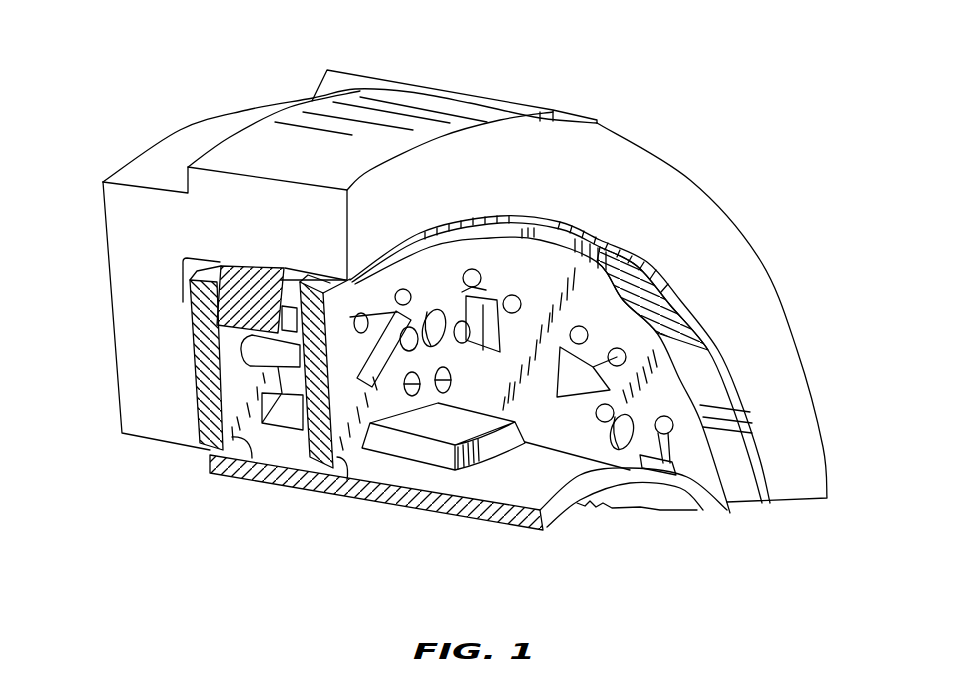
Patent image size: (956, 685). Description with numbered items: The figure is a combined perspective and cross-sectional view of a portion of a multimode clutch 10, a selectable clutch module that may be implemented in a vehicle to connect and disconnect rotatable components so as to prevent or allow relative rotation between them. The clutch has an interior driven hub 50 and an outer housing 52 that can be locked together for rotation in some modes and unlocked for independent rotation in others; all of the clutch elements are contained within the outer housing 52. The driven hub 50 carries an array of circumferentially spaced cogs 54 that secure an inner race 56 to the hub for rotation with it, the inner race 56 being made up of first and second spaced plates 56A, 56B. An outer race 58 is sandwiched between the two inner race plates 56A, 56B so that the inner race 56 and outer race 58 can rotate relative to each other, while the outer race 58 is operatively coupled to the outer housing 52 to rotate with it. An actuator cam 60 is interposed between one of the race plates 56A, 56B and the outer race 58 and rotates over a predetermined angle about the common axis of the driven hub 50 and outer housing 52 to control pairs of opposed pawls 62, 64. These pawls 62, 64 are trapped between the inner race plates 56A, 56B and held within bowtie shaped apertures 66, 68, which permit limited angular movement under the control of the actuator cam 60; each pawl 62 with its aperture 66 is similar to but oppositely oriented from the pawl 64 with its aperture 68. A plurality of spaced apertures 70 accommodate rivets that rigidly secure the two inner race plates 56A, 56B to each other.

The multimode clutch 10 is at (137, 118).
The driven hub 50 is at (543, 487).
The outer housing 52 is at (615, 199).
The cogs 54 is at (397, 443).
The inner race 56 is at (203, 460).
The first inner race plate 56A is at (252, 443).
The second inner race plate 56B is at (347, 460).
The outer race 58 is at (218, 313).
The actuator cam 60 is at (283, 277).
The pawl 62 is at (392, 303).
The pawl 64 is at (483, 350).
The bowtie shaped aperture 66 is at (355, 300).
The bowtie shaped aperture 68 is at (484, 305).
The spaced apertures 70 is at (430, 350).